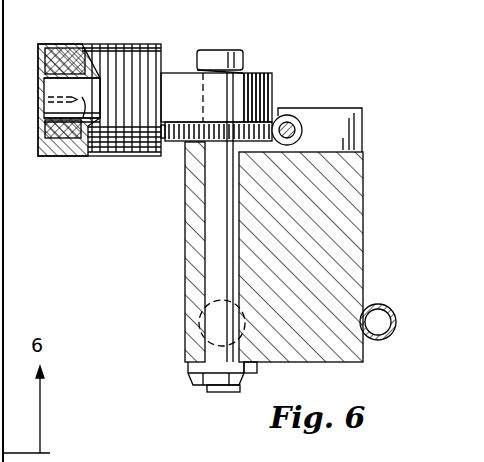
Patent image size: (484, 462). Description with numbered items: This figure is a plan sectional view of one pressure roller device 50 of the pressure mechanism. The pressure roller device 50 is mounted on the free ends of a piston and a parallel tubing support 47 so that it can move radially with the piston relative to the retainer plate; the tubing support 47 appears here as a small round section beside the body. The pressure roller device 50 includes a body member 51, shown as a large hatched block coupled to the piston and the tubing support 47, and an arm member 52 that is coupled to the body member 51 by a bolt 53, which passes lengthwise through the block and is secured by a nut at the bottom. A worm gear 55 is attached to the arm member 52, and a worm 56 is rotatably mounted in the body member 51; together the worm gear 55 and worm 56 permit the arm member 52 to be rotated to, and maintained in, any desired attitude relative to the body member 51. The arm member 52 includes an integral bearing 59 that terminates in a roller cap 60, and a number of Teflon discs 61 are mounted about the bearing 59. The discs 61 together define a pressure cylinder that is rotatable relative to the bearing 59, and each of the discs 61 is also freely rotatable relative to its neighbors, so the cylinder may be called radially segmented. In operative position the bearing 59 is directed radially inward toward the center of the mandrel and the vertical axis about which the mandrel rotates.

The tubing support 47 is at (390, 300).
The pressure roller device 50 is at (146, 223).
The body member 51 is at (363, 189).
The arm member 52 is at (260, 73).
The bolt 53 is at (205, 258).
The worm gear 55 is at (170, 143).
The worm 56 is at (296, 117).
The bearing 59 is at (73, 156).
The roller cap 60 is at (38, 63).
The Teflon discs 61 is at (122, 44).